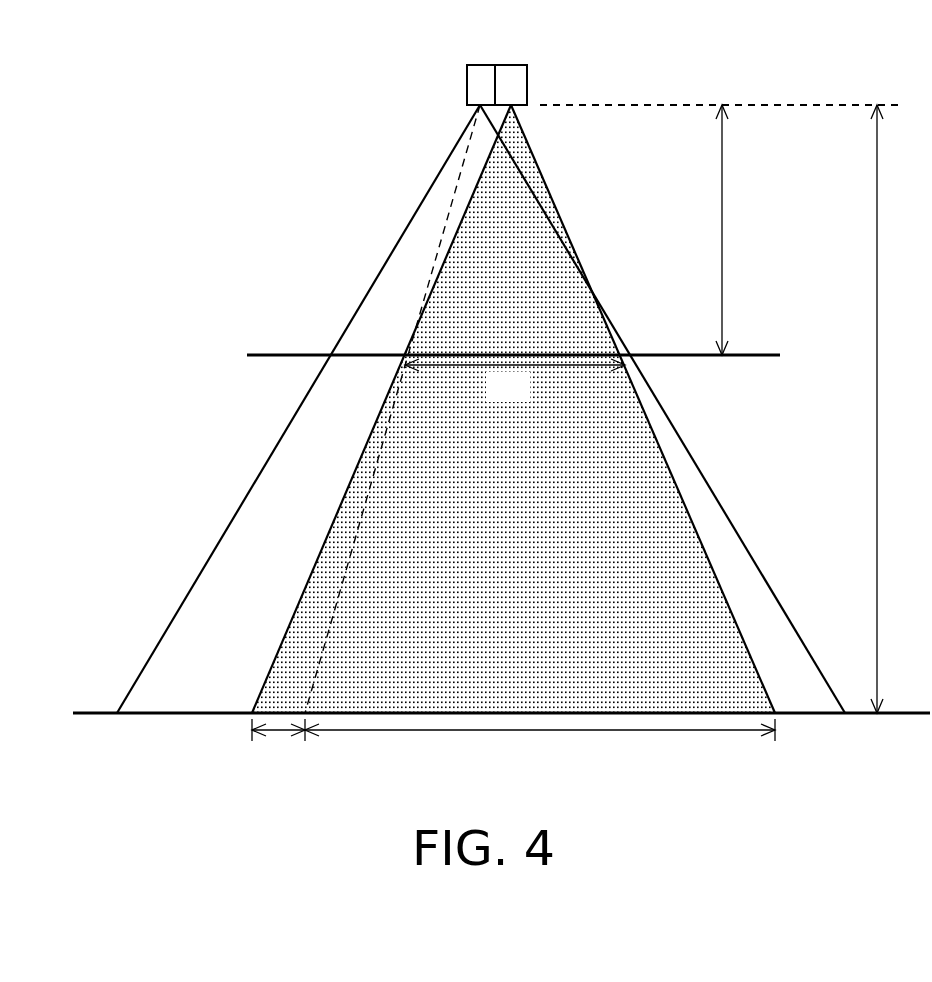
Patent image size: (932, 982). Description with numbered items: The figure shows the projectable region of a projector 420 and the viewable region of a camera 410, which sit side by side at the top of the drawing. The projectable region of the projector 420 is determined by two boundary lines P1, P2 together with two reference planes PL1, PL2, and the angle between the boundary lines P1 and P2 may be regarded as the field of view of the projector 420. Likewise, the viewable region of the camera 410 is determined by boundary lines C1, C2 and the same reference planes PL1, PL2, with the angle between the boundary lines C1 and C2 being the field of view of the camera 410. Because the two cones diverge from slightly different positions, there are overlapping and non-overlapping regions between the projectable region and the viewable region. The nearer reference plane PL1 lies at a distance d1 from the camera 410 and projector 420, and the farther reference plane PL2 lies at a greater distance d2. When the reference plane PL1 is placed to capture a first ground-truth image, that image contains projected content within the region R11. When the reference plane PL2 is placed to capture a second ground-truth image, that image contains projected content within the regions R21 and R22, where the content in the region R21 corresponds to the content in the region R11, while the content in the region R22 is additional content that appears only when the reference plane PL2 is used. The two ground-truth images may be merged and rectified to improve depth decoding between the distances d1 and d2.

The projector 420 is at (467, 78).
The camera 410 is at (527, 78).
The boundary line P1 is at (210, 555).
The boundary line P2 is at (752, 555).
The boundary line C1 is at (337, 513).
The boundary line C2 is at (680, 490).
The reference plane PL1 is at (282, 355).
The reference plane PL2 is at (97, 713).
The distance d1 is at (736, 230).
The distance d2 is at (890, 409).
The region R11 is at (515, 381).
The region R21 is at (540, 742).
The region R22 is at (278, 750).